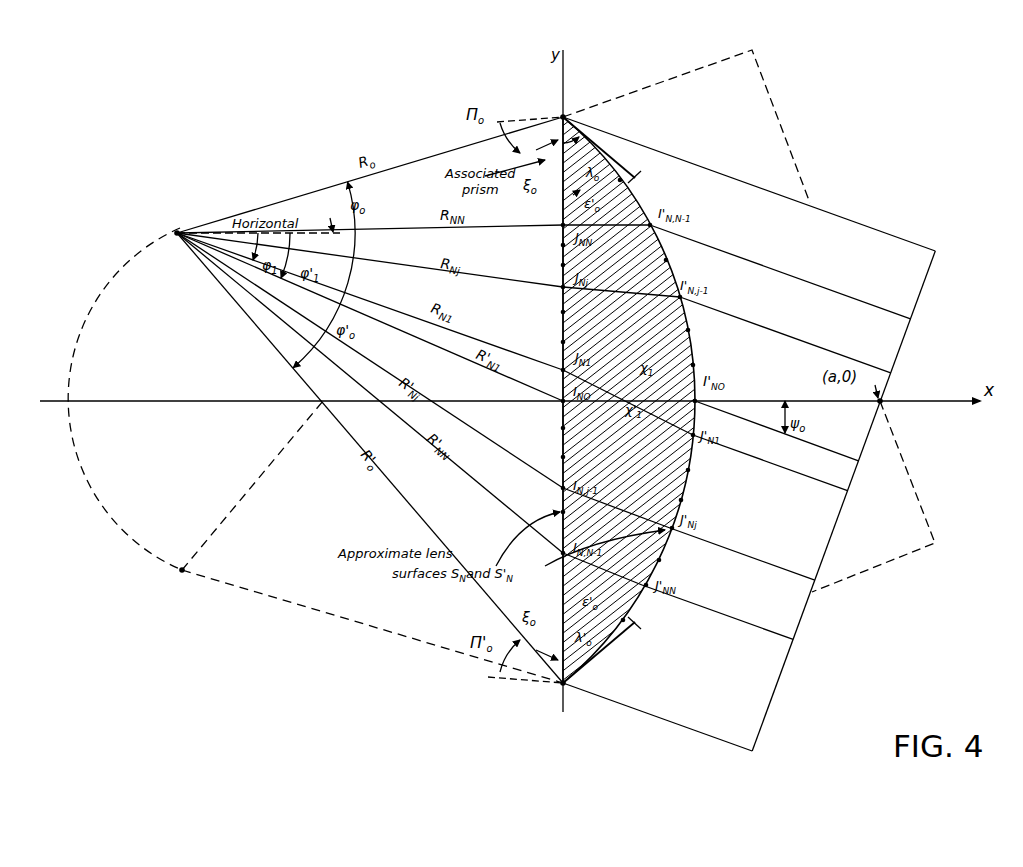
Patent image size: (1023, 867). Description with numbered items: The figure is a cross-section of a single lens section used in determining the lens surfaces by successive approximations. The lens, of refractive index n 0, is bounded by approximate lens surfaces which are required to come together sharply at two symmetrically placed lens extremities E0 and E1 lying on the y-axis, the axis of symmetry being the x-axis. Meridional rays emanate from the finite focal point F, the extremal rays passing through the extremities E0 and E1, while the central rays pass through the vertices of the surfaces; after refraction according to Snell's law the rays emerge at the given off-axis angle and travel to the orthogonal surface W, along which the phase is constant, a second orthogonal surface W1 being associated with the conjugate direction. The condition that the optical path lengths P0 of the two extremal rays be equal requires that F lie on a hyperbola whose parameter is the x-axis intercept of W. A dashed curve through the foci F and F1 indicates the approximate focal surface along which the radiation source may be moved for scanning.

The lens refractive index n0 0 is at (630, 350).
The orthogonal surface W is at (828, 543).
The orthogonal surface W' W1 is at (765, 72).
The finite focal point F is at (325, 400).
The finite focal point F' F1 is at (75, 322).
The optical path length P0 is at (940, 422).
The lens extremity E0 is at (556, 110).
The lens extremity E0' E1 is at (575, 680).